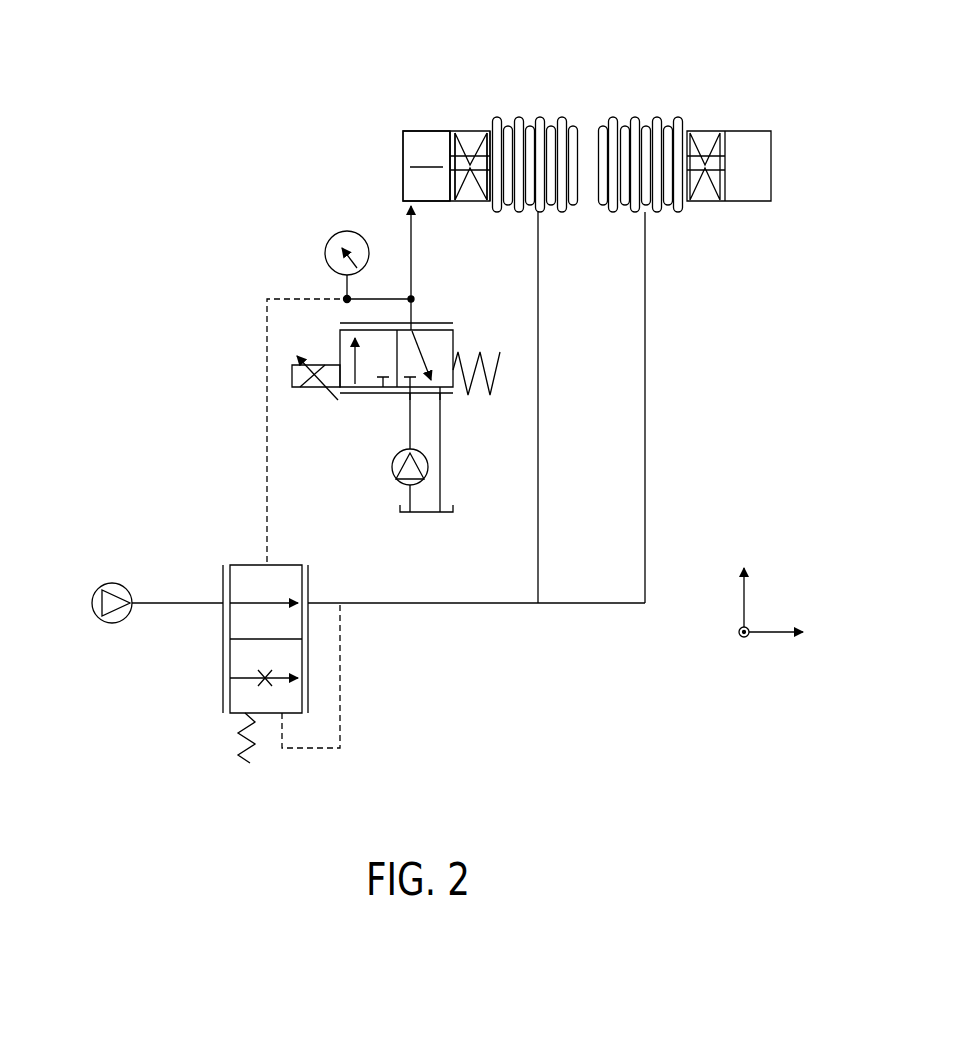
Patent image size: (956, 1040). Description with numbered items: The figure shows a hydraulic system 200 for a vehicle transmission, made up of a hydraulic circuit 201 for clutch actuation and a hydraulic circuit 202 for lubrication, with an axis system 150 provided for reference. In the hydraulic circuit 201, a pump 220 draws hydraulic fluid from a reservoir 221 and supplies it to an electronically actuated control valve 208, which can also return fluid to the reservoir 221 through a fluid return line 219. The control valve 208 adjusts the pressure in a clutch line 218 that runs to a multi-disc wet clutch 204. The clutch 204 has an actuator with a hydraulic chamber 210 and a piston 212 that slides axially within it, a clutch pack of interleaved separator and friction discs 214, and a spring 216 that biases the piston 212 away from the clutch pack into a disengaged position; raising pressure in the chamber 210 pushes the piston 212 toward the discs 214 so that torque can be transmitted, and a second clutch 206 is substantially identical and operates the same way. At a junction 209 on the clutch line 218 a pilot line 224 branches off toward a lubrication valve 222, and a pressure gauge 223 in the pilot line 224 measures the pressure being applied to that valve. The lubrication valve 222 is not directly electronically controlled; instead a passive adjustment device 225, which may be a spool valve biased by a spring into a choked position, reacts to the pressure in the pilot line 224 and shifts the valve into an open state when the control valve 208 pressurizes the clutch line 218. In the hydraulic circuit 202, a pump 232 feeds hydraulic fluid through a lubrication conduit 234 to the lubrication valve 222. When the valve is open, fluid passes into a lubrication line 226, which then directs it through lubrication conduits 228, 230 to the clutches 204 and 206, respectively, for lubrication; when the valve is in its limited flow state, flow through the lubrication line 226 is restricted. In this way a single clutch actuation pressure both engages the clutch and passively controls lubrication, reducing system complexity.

The axis system 150 is at (808, 574).
The hydraulic system 200 is at (100, 93).
The hydraulic circuit 201 is at (163, 243).
The hydraulic circuit 202 is at (578, 687).
The clutch 204 is at (476, 108).
The clutch 206 is at (699, 108).
The control valve 208 is at (375, 408).
The junction 209 is at (424, 300).
The hydraulic chamber 210 is at (426, 166).
The piston 212 is at (452, 201).
The separator and friction discs 214 is at (575, 206).
The spring 216 is at (479, 198).
The clutch line 218 is at (408, 243).
The fluid return line 219 is at (442, 427).
The pump 220 is at (391, 463).
The reservoir 221 is at (450, 513).
The lubrication valve 222 is at (211, 685).
The pressure gauge 223 is at (325, 253).
The pilot line 224 is at (265, 320).
The passive adjustment device 225 is at (243, 773).
The lubrication line 226 is at (433, 603).
The lubrication conduit 228 is at (540, 425).
The lubrication conduit 230 is at (648, 425).
The pump 232 is at (108, 583).
The lubrication conduit 234 is at (186, 603).